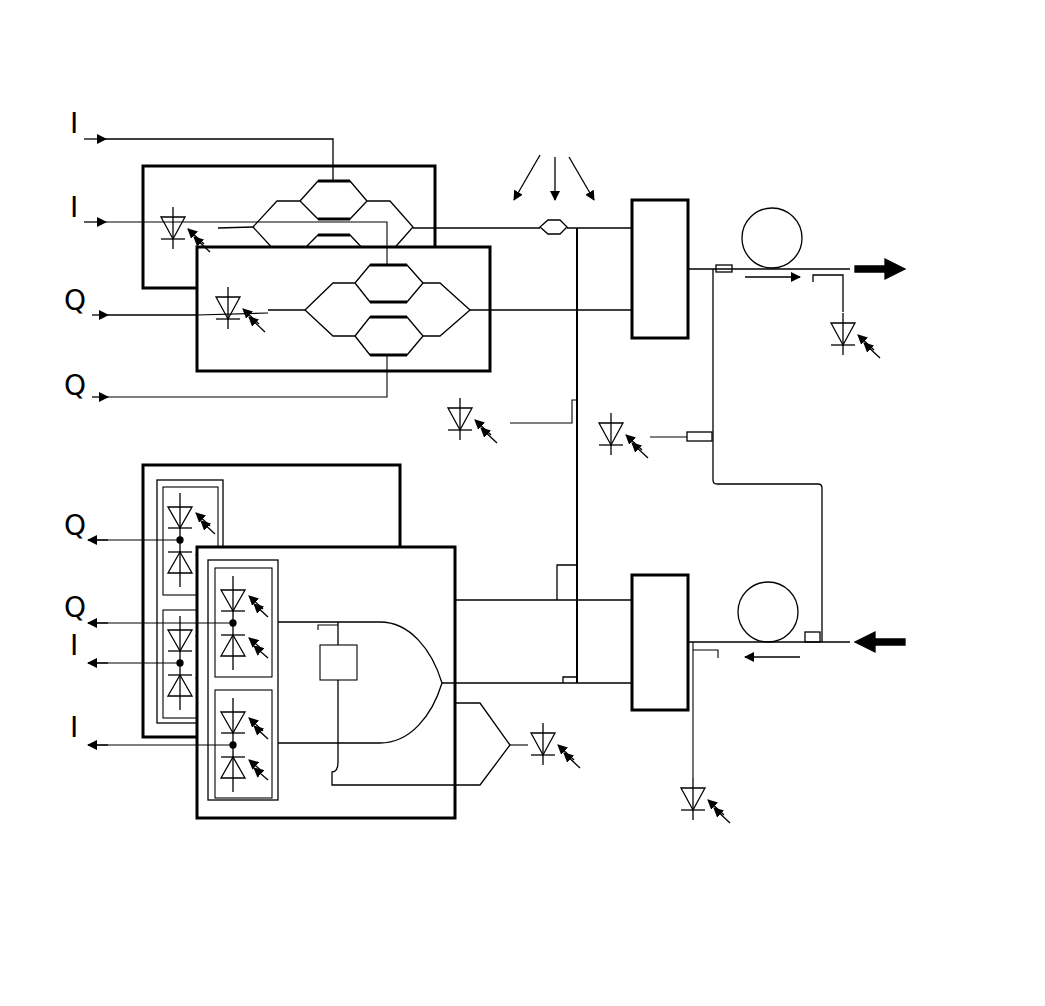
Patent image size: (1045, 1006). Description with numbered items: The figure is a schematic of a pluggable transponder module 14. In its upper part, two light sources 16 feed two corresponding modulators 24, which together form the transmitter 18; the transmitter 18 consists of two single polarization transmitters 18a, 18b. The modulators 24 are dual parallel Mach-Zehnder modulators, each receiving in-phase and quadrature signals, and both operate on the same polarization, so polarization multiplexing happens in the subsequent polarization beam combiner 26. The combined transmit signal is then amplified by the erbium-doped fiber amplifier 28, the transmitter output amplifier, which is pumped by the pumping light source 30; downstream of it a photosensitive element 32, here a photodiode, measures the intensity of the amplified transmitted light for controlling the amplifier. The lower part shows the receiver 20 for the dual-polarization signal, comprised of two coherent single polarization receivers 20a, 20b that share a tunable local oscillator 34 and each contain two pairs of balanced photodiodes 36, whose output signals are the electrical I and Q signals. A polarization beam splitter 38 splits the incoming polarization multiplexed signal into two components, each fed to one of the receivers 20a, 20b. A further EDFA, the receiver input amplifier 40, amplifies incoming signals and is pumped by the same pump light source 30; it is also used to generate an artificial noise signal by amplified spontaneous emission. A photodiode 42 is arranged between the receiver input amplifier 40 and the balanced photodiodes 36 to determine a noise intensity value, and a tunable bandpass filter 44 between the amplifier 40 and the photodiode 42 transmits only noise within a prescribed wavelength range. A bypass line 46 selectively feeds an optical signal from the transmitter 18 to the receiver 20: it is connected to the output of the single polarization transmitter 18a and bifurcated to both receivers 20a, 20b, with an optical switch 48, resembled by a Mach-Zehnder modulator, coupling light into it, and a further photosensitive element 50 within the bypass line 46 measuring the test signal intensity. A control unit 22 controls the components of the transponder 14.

The pluggable transponder module 14 is at (657, 122).
The light source 16 is at (173, 207).
The transmitter 18 is at (345, 158).
The single polarization transmitter 18a is at (181, 166).
The single polarization transmitter 18b is at (197, 338).
The receiver 20 is at (180, 462).
The coherent single polarization receiver 20a is at (385, 442).
The coherent single polarization receiver 20b is at (457, 573).
The control unit 22 is at (573, 146).
The modulator 24 is at (407, 204).
The polarization beam combiner 26 is at (668, 200).
The erbium-doped fiber amplifier 28 is at (797, 210).
The pumping light source 30 is at (617, 421).
The photosensitive element 32 is at (845, 360).
The tunable local oscillator 34 is at (543, 766).
The pair of balanced photodiodes 36 is at (262, 580).
The polarization beam splitter 38 is at (655, 712).
The receiver input amplifier 40 is at (785, 580).
The photodiode 42 is at (697, 822).
The bandpass filter 44 is at (715, 742).
The bypass line 46 is at (580, 490).
The optical switch 48 is at (550, 234).
The photosensitive element 50 is at (465, 445).